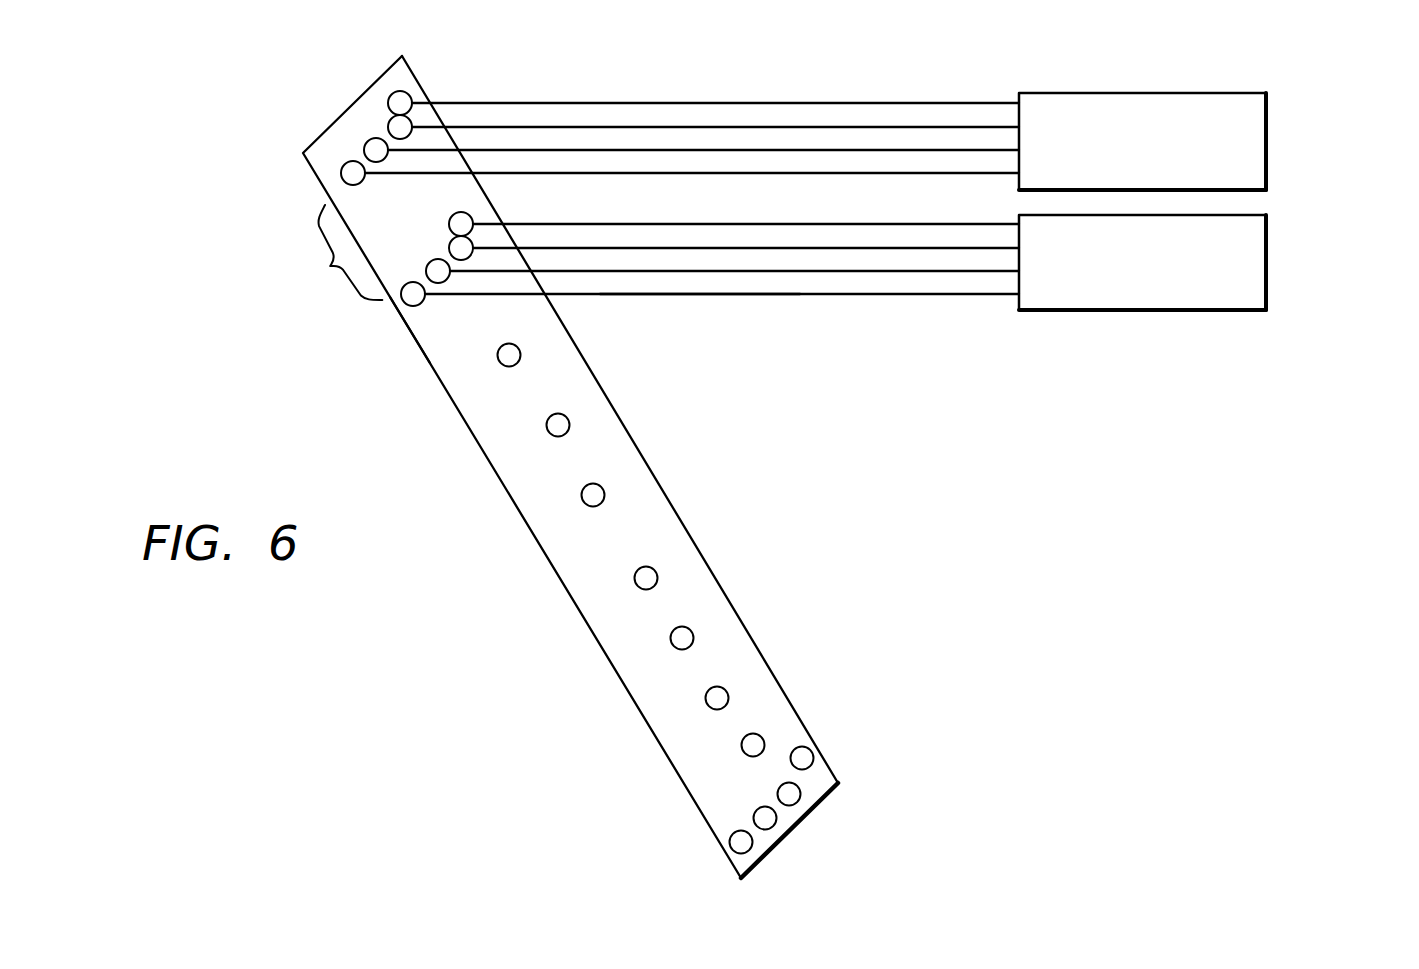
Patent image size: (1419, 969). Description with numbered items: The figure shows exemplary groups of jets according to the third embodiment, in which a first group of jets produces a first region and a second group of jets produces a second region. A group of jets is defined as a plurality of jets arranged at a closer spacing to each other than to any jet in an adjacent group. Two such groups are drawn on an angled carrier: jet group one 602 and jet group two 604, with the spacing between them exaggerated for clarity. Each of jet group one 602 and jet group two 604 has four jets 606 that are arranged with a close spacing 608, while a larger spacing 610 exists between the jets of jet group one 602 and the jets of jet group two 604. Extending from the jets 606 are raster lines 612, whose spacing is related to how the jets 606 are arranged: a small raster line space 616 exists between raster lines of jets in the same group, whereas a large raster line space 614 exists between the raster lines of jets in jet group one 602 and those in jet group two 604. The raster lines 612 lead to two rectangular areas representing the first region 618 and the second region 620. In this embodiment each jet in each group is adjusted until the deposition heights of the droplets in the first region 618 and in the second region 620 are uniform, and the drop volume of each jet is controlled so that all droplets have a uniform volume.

The jet group one 602 is at (323, 160).
The jet group two 604 is at (408, 322).
The jets 606 is at (385, 92).
The close spacing 608 is at (403, 278).
The larger spacing 610 is at (330, 265).
The raster lines 612 is at (690, 295).
The large raster line space 614 is at (814, 174).
The small raster line space 616 is at (833, 129).
The first region 618 is at (1266, 132).
The second region 620 is at (1266, 275).